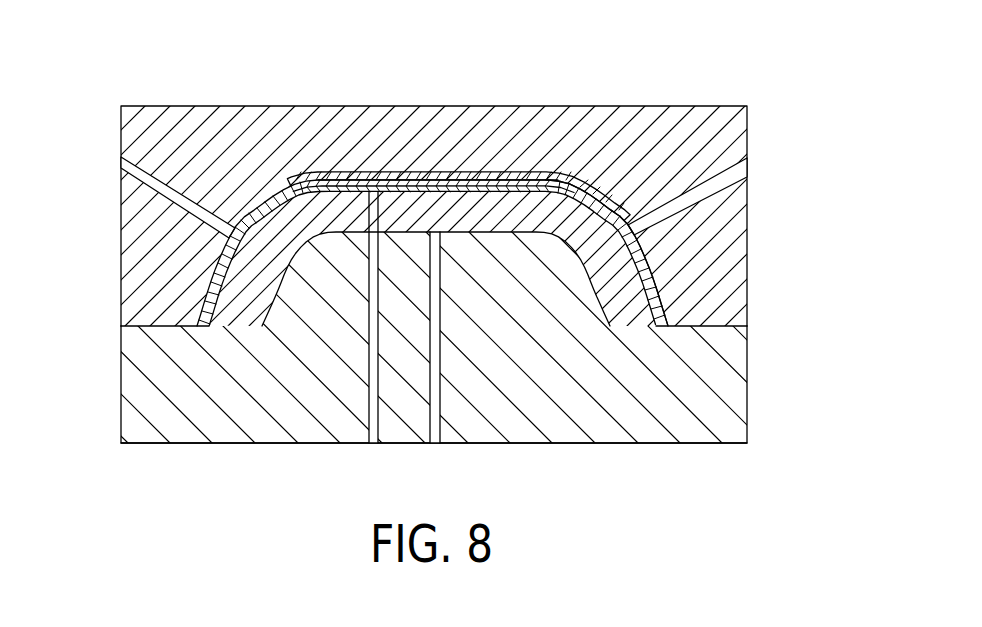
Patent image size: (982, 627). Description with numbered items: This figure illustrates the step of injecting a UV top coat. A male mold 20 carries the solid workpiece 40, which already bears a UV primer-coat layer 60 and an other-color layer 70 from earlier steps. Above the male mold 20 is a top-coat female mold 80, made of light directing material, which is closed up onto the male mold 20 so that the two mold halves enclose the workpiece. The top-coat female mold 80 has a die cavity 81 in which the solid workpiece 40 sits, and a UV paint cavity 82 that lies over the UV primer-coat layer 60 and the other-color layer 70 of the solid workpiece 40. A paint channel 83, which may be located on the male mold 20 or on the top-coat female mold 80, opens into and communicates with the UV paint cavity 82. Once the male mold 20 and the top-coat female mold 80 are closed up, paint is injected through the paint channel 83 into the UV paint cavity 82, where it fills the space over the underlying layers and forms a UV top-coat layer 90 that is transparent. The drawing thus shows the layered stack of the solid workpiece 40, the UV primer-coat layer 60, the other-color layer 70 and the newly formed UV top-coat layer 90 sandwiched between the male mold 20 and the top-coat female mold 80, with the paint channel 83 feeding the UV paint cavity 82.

The male mold 20 is at (672, 420).
The solid workpiece 40 is at (413, 207).
The UV primer-coat layer 60 is at (273, 208).
The other-color layer 70 is at (465, 178).
The top-coat female mold 80 is at (671, 112).
The die cavity 81 is at (563, 188).
The UV paint cavity 82 is at (432, 172).
The paint channel 83 is at (157, 180).
The UV top-coat layer 90 is at (345, 170).